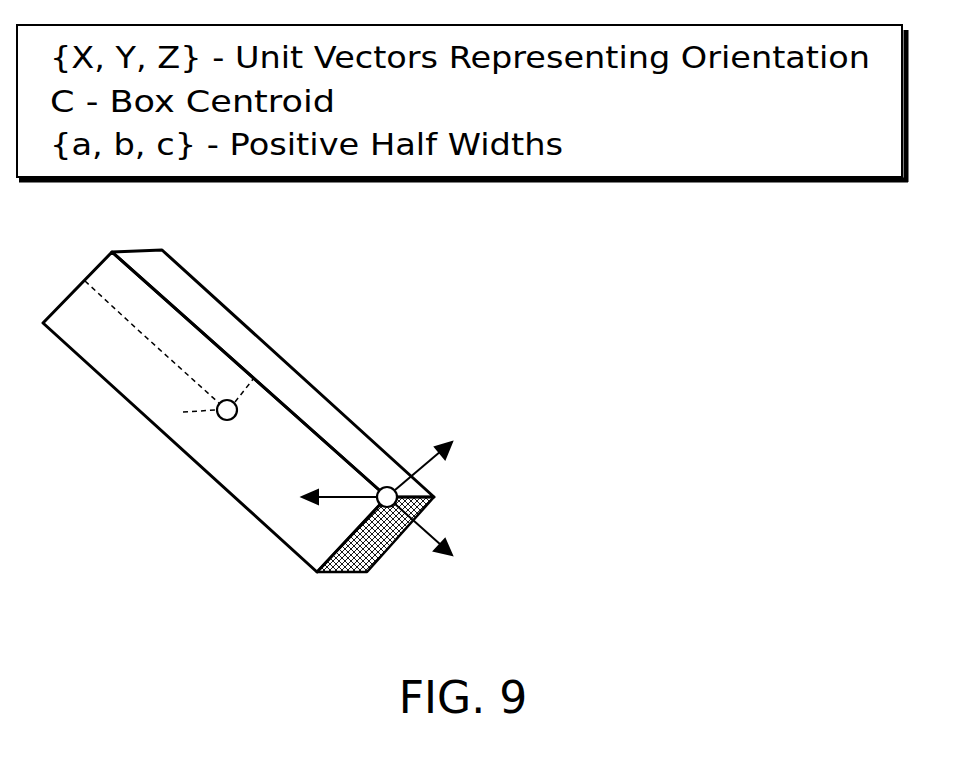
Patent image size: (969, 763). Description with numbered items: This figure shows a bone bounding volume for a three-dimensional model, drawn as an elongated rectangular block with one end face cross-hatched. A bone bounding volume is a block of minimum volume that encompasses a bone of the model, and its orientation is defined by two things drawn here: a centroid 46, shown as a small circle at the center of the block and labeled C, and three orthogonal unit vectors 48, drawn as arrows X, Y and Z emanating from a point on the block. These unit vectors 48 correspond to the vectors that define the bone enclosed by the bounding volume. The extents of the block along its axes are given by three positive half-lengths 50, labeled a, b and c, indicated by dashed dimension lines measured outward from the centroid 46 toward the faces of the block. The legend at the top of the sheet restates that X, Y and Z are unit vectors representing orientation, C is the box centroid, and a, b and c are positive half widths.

The centroid 46 is at (227, 420).
The three orthogonal unit vectors 48 is at (428, 527).
The three positive half-lengths 50 is at (138, 330).